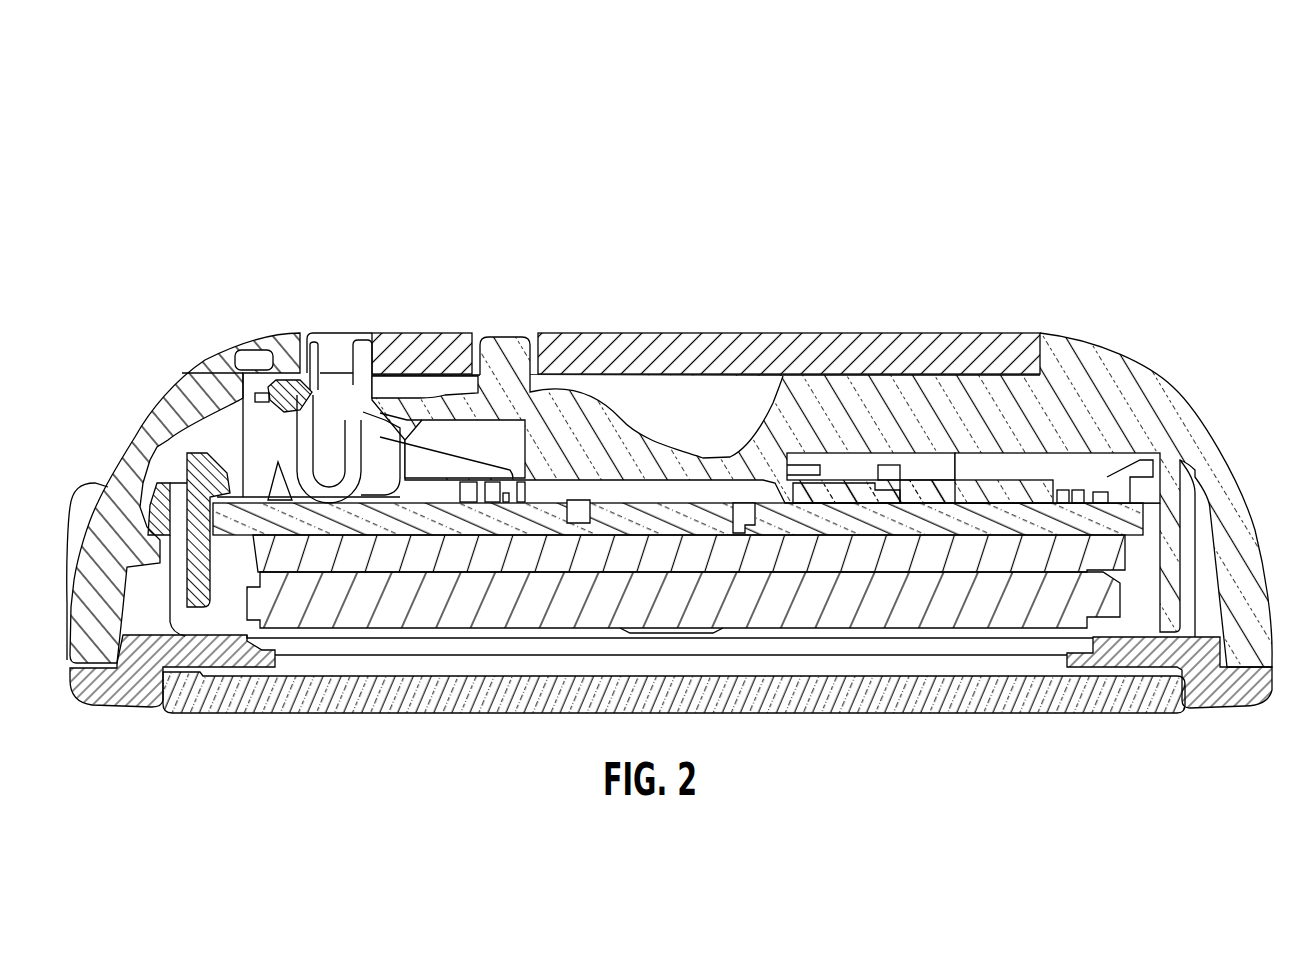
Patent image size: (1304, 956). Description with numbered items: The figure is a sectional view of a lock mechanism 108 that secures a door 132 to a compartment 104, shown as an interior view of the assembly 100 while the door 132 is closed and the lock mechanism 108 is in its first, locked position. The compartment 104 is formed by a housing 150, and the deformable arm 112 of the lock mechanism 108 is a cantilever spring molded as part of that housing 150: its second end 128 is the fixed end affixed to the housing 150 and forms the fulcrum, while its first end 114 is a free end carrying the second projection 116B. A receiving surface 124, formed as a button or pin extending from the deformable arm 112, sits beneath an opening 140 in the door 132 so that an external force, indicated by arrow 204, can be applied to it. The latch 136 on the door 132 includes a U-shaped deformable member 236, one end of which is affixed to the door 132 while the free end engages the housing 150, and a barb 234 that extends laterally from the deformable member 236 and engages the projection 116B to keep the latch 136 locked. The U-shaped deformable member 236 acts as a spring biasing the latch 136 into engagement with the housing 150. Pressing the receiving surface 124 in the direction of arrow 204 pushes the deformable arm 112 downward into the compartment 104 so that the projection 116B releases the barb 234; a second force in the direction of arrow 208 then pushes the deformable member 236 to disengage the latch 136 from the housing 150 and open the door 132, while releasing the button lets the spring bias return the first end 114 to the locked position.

The electronic device 100 is at (1086, 367).
The compartment 104 is at (656, 416).
The lock mechanism 108 is at (518, 427).
The deformable arm 112 is at (645, 435).
The first end 114 is at (414, 405).
The second projection 116B is at (313, 392).
The receiving surface 124 is at (503, 333).
The second end 128 is at (760, 480).
The door 132 is at (667, 333).
The latch 136 is at (300, 333).
The opening 140 is at (475, 333).
The housing 150 is at (1173, 387).
The arrow 204 is at (497, 312).
The arrow 208 is at (190, 352).
The barb 234 is at (300, 335).
The U-shaped deformable member 236 is at (330, 495).